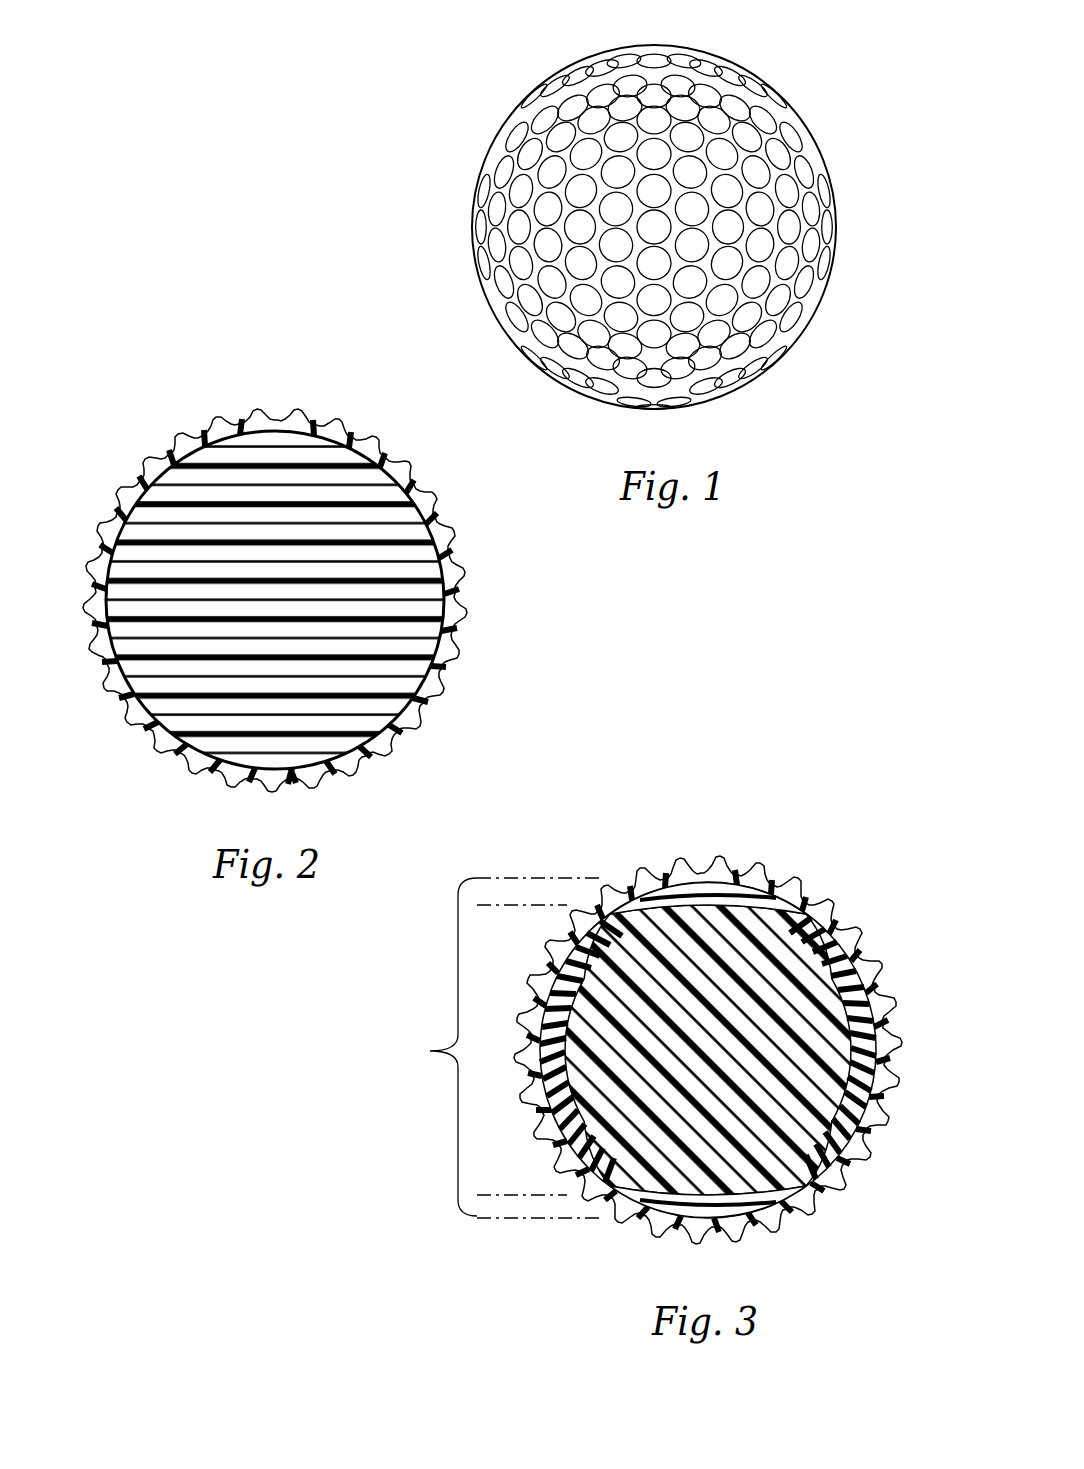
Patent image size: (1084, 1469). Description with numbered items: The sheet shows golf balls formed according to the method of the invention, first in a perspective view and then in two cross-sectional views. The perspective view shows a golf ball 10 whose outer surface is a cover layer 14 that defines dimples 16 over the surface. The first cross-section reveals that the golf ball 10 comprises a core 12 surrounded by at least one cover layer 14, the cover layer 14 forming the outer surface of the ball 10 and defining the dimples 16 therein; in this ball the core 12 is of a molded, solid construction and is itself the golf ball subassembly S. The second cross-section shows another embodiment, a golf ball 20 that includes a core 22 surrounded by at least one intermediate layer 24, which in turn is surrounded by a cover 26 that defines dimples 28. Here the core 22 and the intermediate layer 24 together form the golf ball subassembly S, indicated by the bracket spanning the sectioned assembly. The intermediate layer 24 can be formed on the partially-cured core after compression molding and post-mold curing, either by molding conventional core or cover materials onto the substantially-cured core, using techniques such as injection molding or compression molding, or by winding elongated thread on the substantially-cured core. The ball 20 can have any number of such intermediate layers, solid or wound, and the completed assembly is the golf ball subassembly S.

In FIG. 1, the golf ball 10 is at (692, 207).
In FIG. 2, the golf ball 10 is at (290, 609).
In FIG. 2, the core 12 is at (396, 574).
In FIG. 2, the cover layer 14 is at (180, 450).
In FIG. 1, the dimples 16 is at (706, 64).
In FIG. 2, the dimples 16 is at (353, 434).
In FIG. 3, the golf ball 20 is at (673, 1058).
In FIG. 3, the core 22 is at (600, 1051).
In FIG. 3, the intermediate layer 24 is at (542, 891).
In FIG. 3, the cover 26 is at (882, 980).
In FIG. 3, the dimples 28 is at (792, 882).
In FIG. 3, the golf ball subassembly S is at (442, 1047).